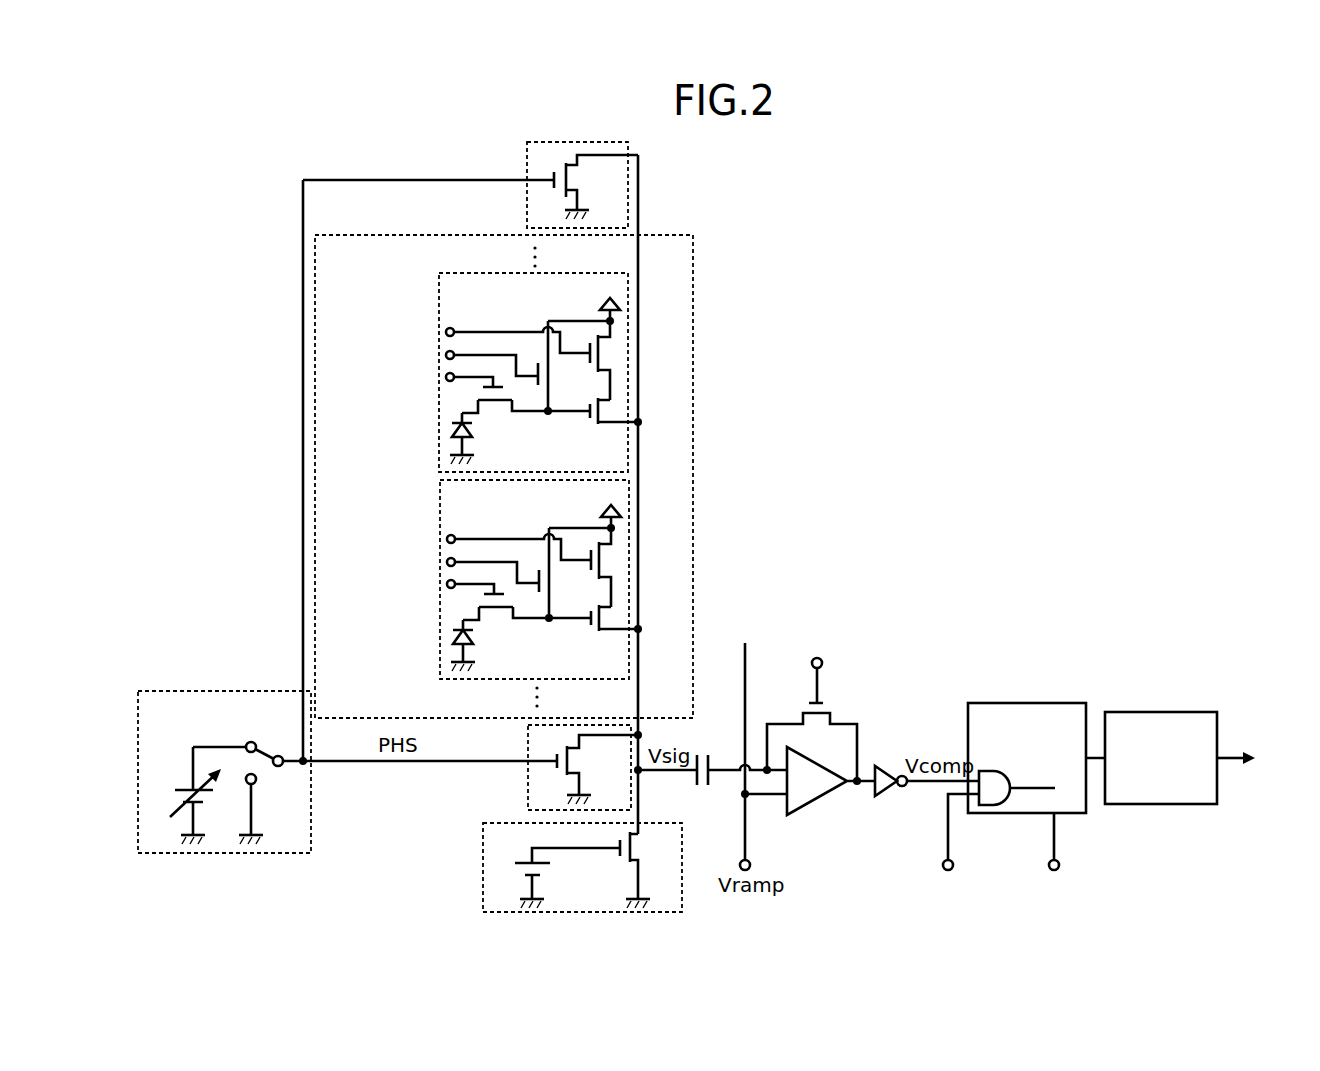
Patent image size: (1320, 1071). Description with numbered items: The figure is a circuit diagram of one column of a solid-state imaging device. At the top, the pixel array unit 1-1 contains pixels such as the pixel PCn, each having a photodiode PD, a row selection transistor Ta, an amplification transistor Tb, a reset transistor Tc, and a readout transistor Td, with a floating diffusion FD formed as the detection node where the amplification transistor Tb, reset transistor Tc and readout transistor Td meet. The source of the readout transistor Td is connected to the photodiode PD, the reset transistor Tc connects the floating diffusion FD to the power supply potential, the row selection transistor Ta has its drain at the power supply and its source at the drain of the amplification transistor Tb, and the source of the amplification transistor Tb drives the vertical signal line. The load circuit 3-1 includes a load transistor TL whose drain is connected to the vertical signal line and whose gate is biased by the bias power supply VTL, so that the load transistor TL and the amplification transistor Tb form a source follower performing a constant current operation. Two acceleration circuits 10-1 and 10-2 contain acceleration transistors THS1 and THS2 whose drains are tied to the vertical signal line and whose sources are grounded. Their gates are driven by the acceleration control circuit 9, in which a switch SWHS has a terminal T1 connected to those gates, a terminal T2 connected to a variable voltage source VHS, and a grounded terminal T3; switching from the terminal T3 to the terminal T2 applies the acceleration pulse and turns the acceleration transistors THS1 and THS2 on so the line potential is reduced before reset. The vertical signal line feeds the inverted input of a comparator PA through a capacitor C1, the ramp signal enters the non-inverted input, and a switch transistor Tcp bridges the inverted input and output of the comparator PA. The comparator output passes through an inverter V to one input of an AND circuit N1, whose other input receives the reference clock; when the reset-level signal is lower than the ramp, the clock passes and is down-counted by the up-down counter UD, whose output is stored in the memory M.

The pixel array unit 1-1 is at (695, 293).
The pixel PCn is at (520, 372).
The row selection transistor Ta is at (600, 350).
The amplification transistor Tb is at (600, 408).
The reset transistor Tc is at (548, 372).
The readout transistor Td is at (501, 412).
The photodiode PD is at (452, 427).
The floating diffusion FD is at (548, 419).
The acceleration circuit 10-1 is at (470, 185).
The acceleration transistor THS1 is at (565, 183).
The acceleration circuit 10-2 is at (472, 767).
The acceleration transistor THS2 is at (565, 770).
The acceleration control circuit 9 is at (243, 772).
The variable voltage source VHS is at (185, 786).
The switch SWHS is at (268, 745).
The terminal T1 is at (280, 768).
The terminal T2 is at (248, 743).
The terminal T3 is at (251, 786).
The load circuit 3-1 is at (555, 865).
The load transistor TL is at (633, 845).
The bias power supply VTL is at (520, 861).
The capacitor C1 is at (712, 762).
The comparator PA is at (817, 808).
The switch transistor Tcp is at (822, 712).
The inverter V is at (884, 767).
The up-down counter UD is at (1017, 773).
The AND circuit N1 is at (995, 806).
The memory M is at (1157, 712).